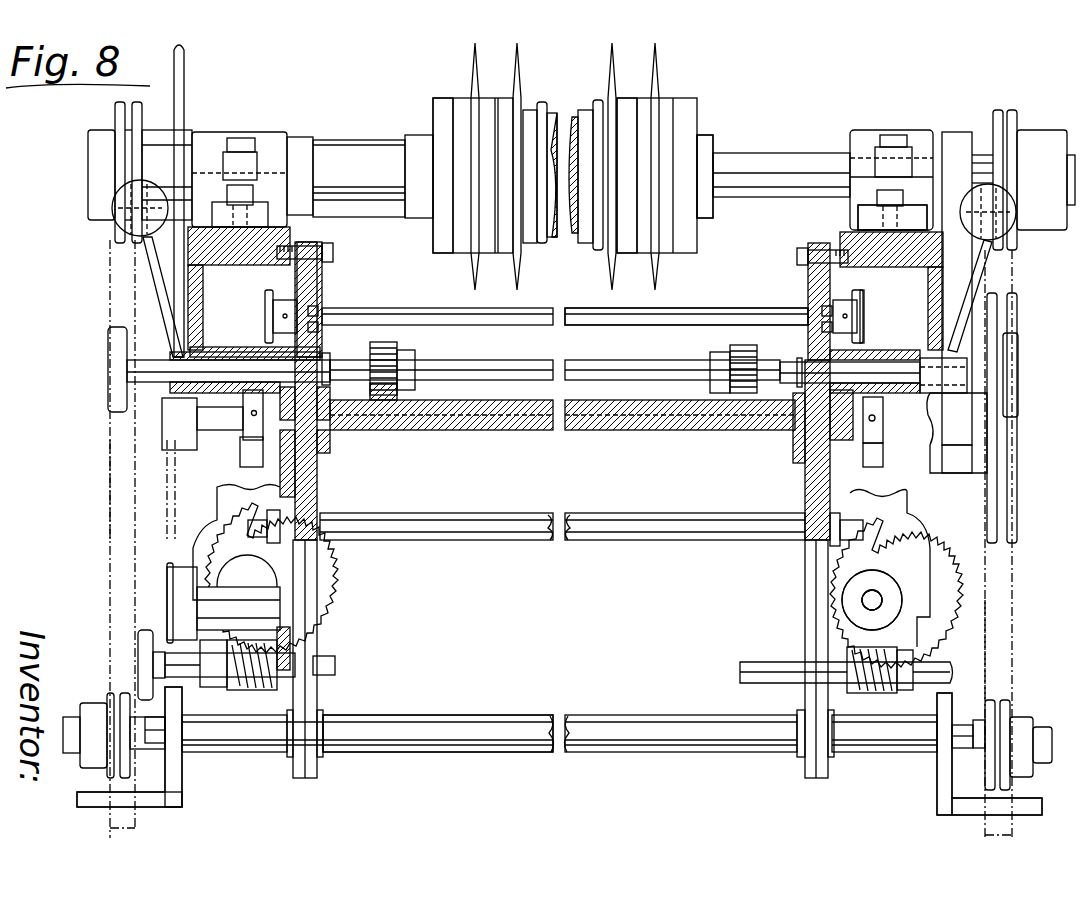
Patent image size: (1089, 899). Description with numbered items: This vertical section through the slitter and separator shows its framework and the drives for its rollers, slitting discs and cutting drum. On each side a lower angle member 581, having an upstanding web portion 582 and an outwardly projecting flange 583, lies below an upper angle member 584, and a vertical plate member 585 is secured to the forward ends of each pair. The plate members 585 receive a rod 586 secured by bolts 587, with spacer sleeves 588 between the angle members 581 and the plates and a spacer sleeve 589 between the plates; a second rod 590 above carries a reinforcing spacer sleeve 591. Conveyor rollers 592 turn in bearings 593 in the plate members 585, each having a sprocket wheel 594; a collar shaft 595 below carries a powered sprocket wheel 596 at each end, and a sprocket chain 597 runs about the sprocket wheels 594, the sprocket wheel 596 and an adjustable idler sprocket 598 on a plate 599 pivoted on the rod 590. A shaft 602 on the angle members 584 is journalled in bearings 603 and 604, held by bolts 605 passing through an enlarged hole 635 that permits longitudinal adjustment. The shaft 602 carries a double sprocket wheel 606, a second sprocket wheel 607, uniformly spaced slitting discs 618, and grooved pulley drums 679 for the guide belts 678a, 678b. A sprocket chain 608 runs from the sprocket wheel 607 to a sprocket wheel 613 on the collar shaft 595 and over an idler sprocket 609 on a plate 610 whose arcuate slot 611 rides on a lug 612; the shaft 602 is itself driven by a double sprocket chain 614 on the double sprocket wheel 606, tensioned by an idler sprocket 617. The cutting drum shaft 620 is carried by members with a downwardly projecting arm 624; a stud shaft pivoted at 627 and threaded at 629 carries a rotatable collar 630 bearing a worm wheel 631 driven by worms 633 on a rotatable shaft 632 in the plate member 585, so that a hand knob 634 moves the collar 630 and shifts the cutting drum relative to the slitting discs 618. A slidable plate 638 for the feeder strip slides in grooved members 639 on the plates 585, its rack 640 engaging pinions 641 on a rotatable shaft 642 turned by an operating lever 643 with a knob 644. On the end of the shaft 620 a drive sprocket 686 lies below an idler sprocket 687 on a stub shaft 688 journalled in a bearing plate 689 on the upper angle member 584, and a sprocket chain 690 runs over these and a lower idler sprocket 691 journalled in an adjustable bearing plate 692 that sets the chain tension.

The angle member 581 is at (182, 812).
The upstanding web portion 582 is at (182, 692).
The outwardly projecting flange 583 is at (95, 808).
The upper angle member 584 is at (210, 282).
The plate member 585 is at (312, 780).
The rod 586 is at (558, 750).
The bolts 587 is at (160, 748).
The spacer sleeves 588 is at (260, 752).
The spacer sleeve 589 is at (725, 752).
The second rod 590 is at (560, 520).
The spacer sleeve 591 is at (657, 518).
The conveyor rollers 592 is at (746, 318).
The bearings 593 is at (320, 305).
The sprocket wheel 594 is at (265, 299).
The collar shaft 595 is at (222, 425).
The powered sprocket wheel 596 is at (275, 371).
The sprocket chain 597 is at (865, 335).
The adjustable idler sprocket 598 is at (883, 460).
The adjustable plate 599 is at (290, 500).
The shaft 602 is at (788, 165).
The bearing 603 is at (865, 132).
The bearing 604 is at (275, 138).
The bolts 605 is at (248, 196).
The double sprocket wheel 606 is at (115, 118).
The second sprocket wheel 607 is at (184, 74).
The sprocket chain 608 is at (180, 492).
The idler sprocket 609 is at (167, 583).
The plate 610 is at (280, 585).
The arcuate slot 611 is at (293, 668).
The lug 612 is at (283, 652).
The sprocket wheel 613 is at (165, 434).
The double sprocket chain 614 is at (108, 518).
The adjustable idler sprocket 617 is at (112, 776).
The slitting discs 618 is at (520, 75).
The shaft 620 is at (947, 458).
The downwardly projecting arm 624 is at (930, 548).
The pivot 627 is at (885, 597).
The threaded end 629 is at (860, 600).
The rotatable collar 630 is at (905, 605).
The worm wheel 631 is at (233, 545).
The rotatable shaft 632 is at (778, 662).
The worms 633 is at (270, 690).
The hand knob 634 is at (140, 640).
The enlarged hole 635 is at (862, 232).
The slidable plate 638 is at (525, 430).
The grooved members 639 is at (330, 460).
The rack 640 is at (385, 430).
The pinions 641 is at (397, 345).
The rotatable shaft 642 is at (578, 366).
The operating lever 643 is at (152, 279).
The knob 644 is at (120, 215).
The guide belts 678a is at (648, 253).
The guide belts 678b is at (489, 98).
The pulley drums 679 is at (700, 118).
The drive sprocket 686 is at (1017, 486).
The idler sprocket 687 is at (1015, 128).
The stub shaft 688 is at (992, 130).
The bearing plate 689 is at (952, 132).
The sprocket chain 690 is at (1014, 578).
The lower idler sprocket 691 is at (1018, 720).
The adjustable bearing plate 692 is at (995, 705).